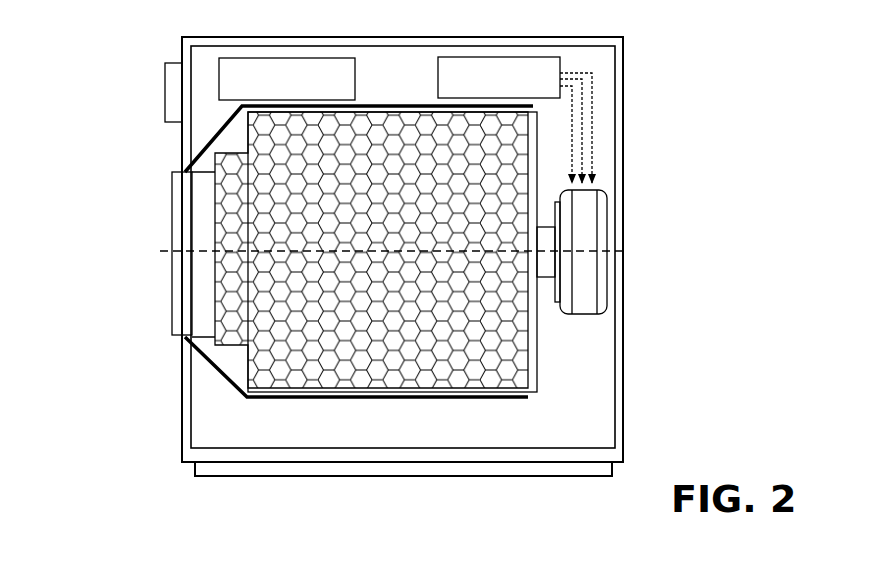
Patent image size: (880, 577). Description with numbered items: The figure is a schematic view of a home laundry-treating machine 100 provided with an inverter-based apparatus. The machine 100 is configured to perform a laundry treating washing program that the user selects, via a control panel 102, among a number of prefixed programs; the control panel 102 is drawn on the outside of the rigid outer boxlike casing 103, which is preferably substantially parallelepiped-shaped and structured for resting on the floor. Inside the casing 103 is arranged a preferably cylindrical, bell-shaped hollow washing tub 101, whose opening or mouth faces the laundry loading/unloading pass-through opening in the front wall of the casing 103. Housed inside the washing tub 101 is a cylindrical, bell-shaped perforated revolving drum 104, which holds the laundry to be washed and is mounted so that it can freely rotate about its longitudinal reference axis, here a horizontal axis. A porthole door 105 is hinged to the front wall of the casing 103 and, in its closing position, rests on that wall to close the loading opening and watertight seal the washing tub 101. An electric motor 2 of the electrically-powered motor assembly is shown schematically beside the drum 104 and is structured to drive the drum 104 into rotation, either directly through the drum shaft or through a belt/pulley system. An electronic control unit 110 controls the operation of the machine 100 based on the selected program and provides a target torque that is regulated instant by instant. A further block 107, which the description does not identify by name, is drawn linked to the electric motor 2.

The home laundry-treating machine 100 is at (172, 484).
The washing tub 101 is at (400, 392).
The control panel 102 is at (156, 92).
The outer boxlike casing 103 is at (182, 432).
The revolving drum 104 is at (490, 390).
The porthole door 105 is at (177, 322).
The controller 107 is at (515, 120).
The electronic control unit 110 is at (287, 79).
The electric motor 2 is at (602, 212).